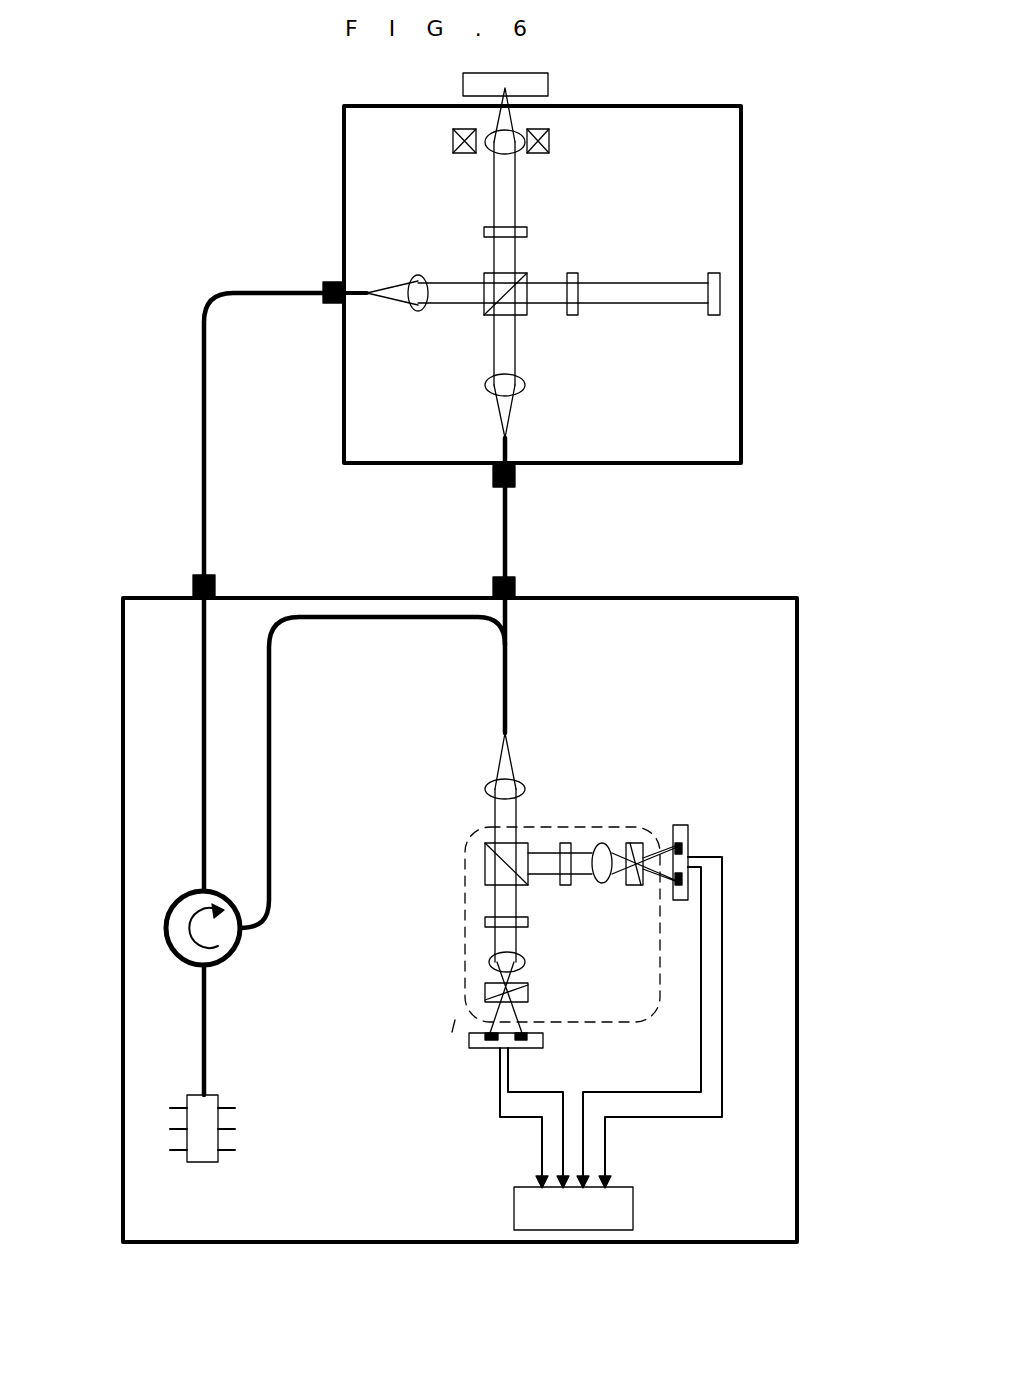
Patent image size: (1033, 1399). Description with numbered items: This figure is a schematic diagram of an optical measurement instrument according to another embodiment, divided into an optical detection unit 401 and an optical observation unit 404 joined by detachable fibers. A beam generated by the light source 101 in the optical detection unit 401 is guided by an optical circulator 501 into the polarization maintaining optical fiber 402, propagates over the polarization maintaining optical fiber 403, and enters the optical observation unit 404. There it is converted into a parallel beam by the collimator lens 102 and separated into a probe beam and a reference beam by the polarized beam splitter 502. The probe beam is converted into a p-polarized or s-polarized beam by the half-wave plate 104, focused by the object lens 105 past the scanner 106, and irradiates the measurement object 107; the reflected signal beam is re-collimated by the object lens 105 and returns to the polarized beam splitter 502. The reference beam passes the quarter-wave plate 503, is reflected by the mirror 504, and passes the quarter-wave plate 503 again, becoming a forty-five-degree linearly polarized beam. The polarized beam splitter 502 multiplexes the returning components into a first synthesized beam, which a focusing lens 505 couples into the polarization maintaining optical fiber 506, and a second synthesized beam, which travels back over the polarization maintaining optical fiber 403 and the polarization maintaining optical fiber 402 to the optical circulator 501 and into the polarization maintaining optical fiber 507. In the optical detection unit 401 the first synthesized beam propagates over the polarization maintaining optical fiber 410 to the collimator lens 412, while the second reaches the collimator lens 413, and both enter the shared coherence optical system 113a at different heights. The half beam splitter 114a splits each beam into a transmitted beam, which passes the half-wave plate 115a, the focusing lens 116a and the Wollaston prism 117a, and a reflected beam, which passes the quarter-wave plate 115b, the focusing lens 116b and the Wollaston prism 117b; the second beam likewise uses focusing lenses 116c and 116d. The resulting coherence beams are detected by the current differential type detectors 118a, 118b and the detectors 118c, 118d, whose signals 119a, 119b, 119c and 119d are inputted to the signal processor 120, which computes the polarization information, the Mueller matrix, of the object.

The light source 101 is at (210, 1162).
The collimator lens 102 is at (412, 280).
The λ/2 plate 104 is at (484, 232).
The object lens 105 is at (520, 134).
The scanner 106 is at (549, 141).
The measurement object 107 is at (463, 88).
The first coherence optical system 113a is at (455, 1020).
The half beam splitter 114a is at (490, 845).
The λ/2 plate 115a is at (528, 922).
The λ/4 plate 115b is at (565, 843).
The focusing lens 116a is at (414, 955).
The focusing lens 116b is at (616, 784).
The focusing lens 116c is at (490, 958).
The focusing lens 116d is at (603, 843).
The Wollaston prism 117a is at (528, 990).
The Wollaston prism 117b is at (636, 843).
The current differential type detector 118a is at (575, 1044).
The current differential type detector 118b is at (712, 815).
The detector 118c is at (543, 1040).
The detector 118d is at (685, 825).
The signal 119a is at (510, 1074).
The signal 119b is at (703, 1097).
The signal 119c is at (499, 1106).
The signal 119d is at (638, 1118).
The signal processor 120 is at (514, 1197).
The optical detection unit 401 is at (123, 1000).
The polarization maintaining optical fiber 402 is at (203, 722).
The polarization maintaining optical fiber 403 is at (204, 465).
The optical observation unit 404 is at (344, 138).
The polarization maintaining optical fiber 410 is at (507, 630).
The collimator lens 412 is at (440, 738).
The collimator lens 413 is at (498, 780).
The optical circulator 501 is at (228, 958).
The polarized beam splitter 502 is at (484, 288).
The λ/4 plate 503 is at (572, 273).
The mirror 504 is at (713, 273).
The focusing lens 505 is at (525, 385).
The polarization maintaining optical fiber 506 is at (507, 540).
The polarization maintaining optical fiber 507 is at (270, 832).